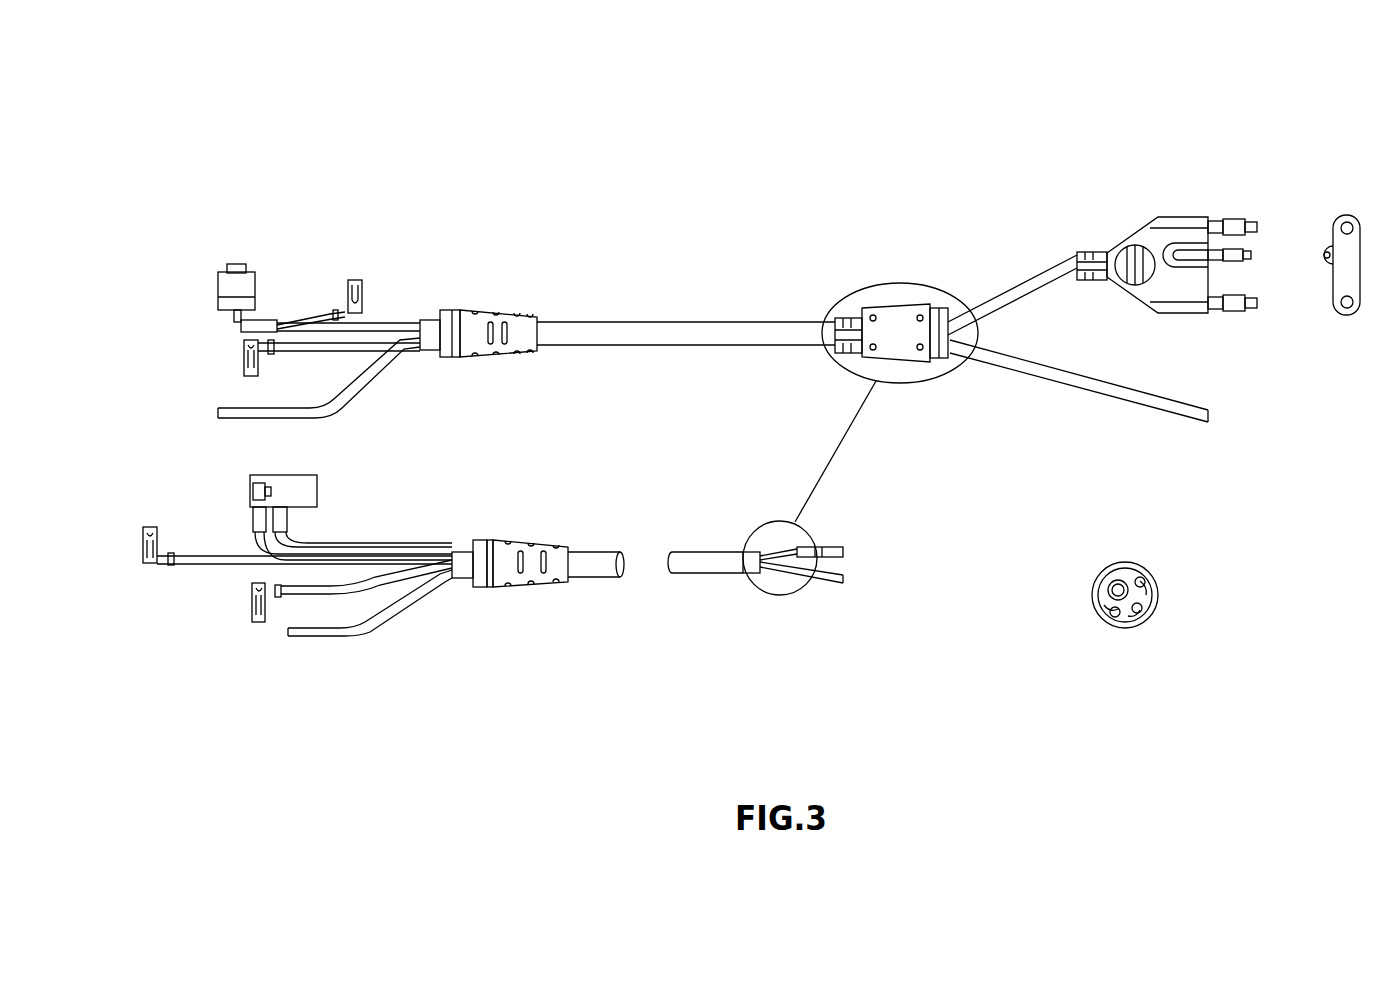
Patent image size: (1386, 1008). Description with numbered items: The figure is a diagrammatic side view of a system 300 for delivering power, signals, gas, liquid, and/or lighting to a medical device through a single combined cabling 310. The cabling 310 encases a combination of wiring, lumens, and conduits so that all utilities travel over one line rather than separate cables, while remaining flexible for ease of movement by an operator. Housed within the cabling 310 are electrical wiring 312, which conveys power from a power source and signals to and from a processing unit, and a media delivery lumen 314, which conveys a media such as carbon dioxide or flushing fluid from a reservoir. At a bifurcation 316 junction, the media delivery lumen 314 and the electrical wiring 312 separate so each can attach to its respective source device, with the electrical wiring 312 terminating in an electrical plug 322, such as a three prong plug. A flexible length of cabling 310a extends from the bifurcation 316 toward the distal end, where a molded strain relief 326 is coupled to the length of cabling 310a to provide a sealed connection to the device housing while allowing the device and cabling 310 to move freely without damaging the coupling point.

The system 300 is at (318, 174).
The cabling 310 is at (596, 296).
The length of cabling 310a is at (687, 330).
The electrical wiring 312 is at (1003, 290).
The media delivery lumen 314 is at (357, 395).
The bifurcation 316 is at (865, 363).
The electrical plug 322 is at (1162, 222).
The molded strain relief 326 is at (512, 312).